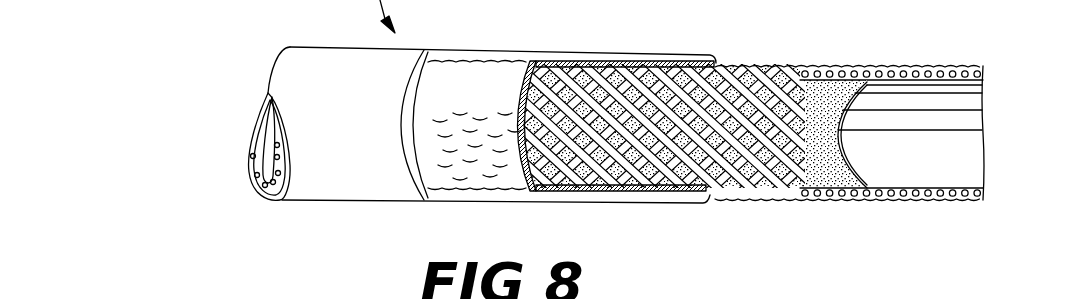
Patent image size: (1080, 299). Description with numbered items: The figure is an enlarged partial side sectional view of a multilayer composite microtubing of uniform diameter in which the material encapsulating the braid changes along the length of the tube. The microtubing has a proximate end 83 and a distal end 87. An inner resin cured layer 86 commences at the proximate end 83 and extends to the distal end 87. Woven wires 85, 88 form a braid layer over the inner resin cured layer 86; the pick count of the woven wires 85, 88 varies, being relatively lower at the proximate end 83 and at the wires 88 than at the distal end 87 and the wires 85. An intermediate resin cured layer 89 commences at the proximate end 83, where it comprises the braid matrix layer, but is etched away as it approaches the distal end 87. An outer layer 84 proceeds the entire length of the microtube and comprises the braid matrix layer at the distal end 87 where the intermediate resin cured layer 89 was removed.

The proximate end 83 is at (283, 203).
The outer layer 84 is at (364, 141).
The woven wires 85 is at (952, 204).
The inner resin cured layer 86 is at (898, 69).
The distal end 87 is at (979, 74).
The woven wires 88 is at (603, 199).
The intermediate resin cured layer 89 is at (495, 137).